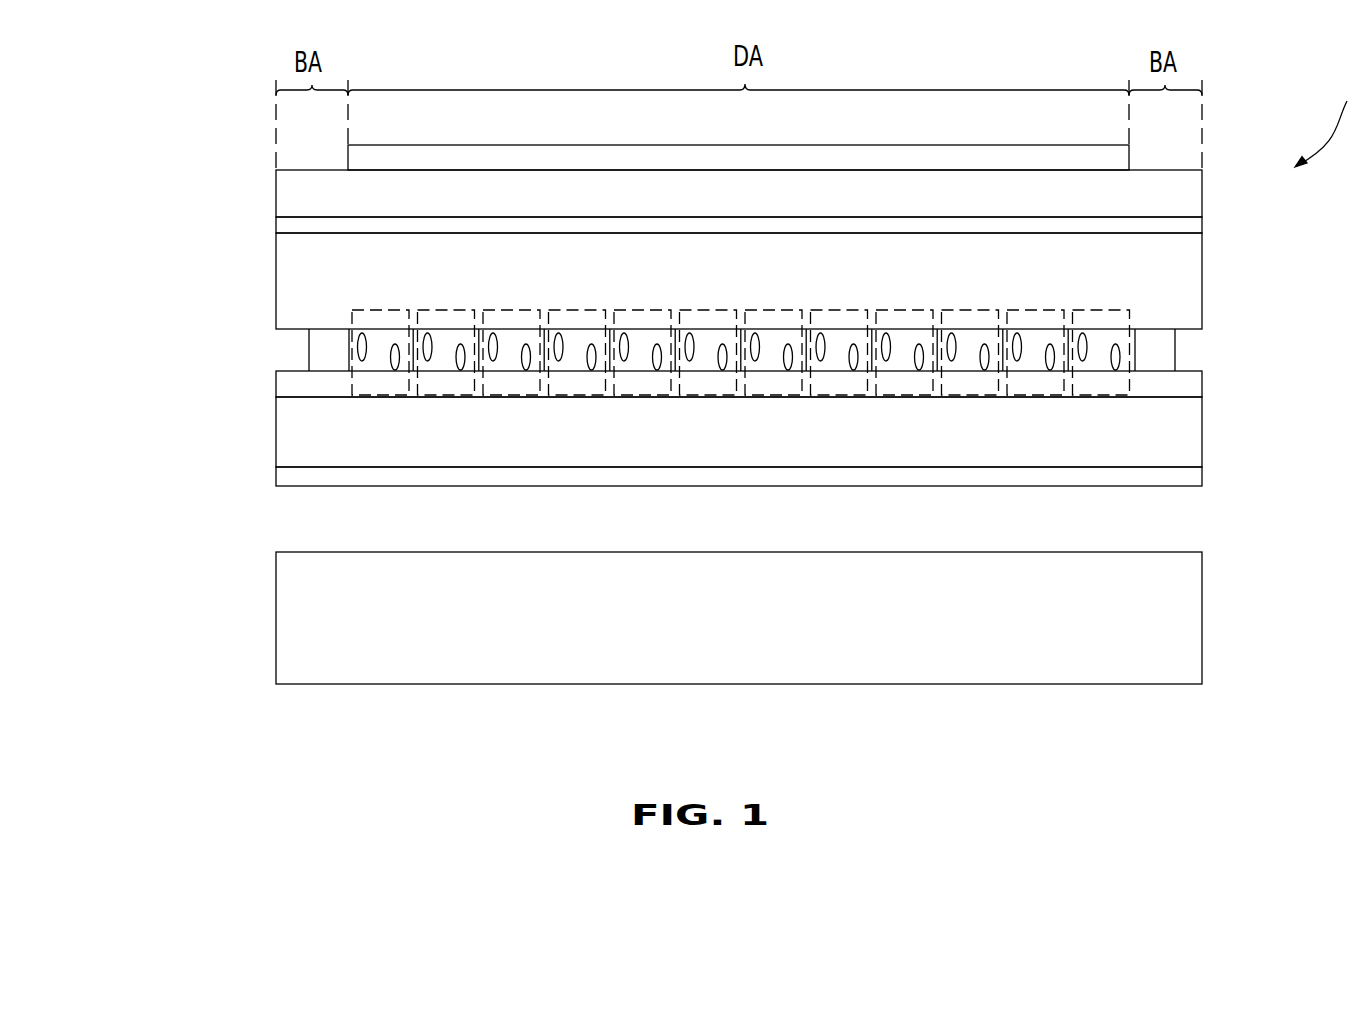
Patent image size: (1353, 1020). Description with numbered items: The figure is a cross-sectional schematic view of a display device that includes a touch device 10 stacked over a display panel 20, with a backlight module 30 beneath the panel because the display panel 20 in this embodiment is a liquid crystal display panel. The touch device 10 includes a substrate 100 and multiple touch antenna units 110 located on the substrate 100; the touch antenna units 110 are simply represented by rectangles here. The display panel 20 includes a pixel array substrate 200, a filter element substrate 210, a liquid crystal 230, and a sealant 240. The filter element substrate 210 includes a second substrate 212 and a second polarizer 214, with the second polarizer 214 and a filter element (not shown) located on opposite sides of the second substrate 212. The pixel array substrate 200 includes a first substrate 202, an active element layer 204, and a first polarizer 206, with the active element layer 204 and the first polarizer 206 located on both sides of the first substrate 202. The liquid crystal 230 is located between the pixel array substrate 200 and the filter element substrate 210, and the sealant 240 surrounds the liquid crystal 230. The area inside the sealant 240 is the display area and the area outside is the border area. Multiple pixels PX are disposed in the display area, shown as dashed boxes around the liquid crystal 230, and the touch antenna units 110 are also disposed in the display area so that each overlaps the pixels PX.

The touch device 10 is at (669, 161).
The touch antenna units 110 is at (360, 155).
The substrate 100 is at (293, 189).
The display panel 20 is at (623, 379).
The filter element substrate 210 is at (660, 270).
The second polarizer 214 is at (293, 224).
The second substrate 212 is at (297, 268).
The sealant 240 is at (318, 345).
The liquid crystal 230 is at (357, 349).
The pixel array substrate 200 is at (657, 436).
The active element layer 204 is at (288, 384).
The first substrate 202 is at (288, 433).
The first polarizer 206 is at (691, 484).
The pixels PX is at (380, 397).
The backlight module 30 is at (293, 615).